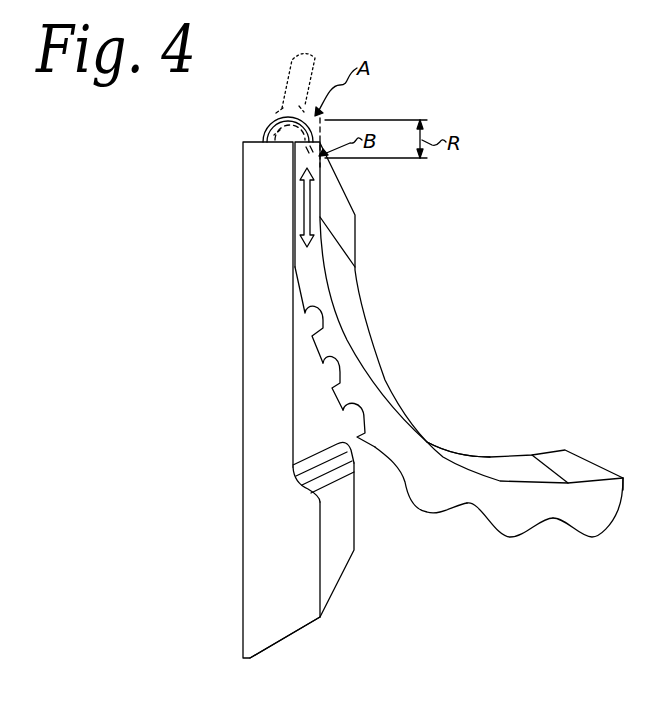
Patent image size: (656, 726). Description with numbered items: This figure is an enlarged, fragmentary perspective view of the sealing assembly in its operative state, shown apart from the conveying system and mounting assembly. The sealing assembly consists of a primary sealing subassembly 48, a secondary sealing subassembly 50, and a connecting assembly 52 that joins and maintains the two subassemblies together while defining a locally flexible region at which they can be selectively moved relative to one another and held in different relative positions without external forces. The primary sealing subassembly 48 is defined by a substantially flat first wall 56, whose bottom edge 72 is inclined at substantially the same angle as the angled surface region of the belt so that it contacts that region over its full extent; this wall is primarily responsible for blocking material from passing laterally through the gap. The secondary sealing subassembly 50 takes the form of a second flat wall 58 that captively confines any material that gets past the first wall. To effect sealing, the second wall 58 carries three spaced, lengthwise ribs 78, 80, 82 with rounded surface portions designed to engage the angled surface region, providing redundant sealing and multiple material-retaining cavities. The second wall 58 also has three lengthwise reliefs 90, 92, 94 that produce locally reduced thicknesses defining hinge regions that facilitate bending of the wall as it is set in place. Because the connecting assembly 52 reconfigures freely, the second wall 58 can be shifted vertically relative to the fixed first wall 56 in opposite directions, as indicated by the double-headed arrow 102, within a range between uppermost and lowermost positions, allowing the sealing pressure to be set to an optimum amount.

The primary sealing subassembly 48 is at (243, 557).
The secondary sealing subassembly 50 is at (455, 454).
The connecting assembly 52 is at (280, 118).
The first wall 56 is at (252, 288).
The second wall 58 is at (317, 288).
The bottom edge 72 is at (290, 638).
The rib 78 is at (595, 538).
The rib 80 is at (509, 537).
The rib 82 is at (421, 509).
The relief 90 is at (364, 418).
The relief 92 is at (339, 379).
The relief 94 is at (322, 330).
The double-headed arrow 102 is at (307, 197).